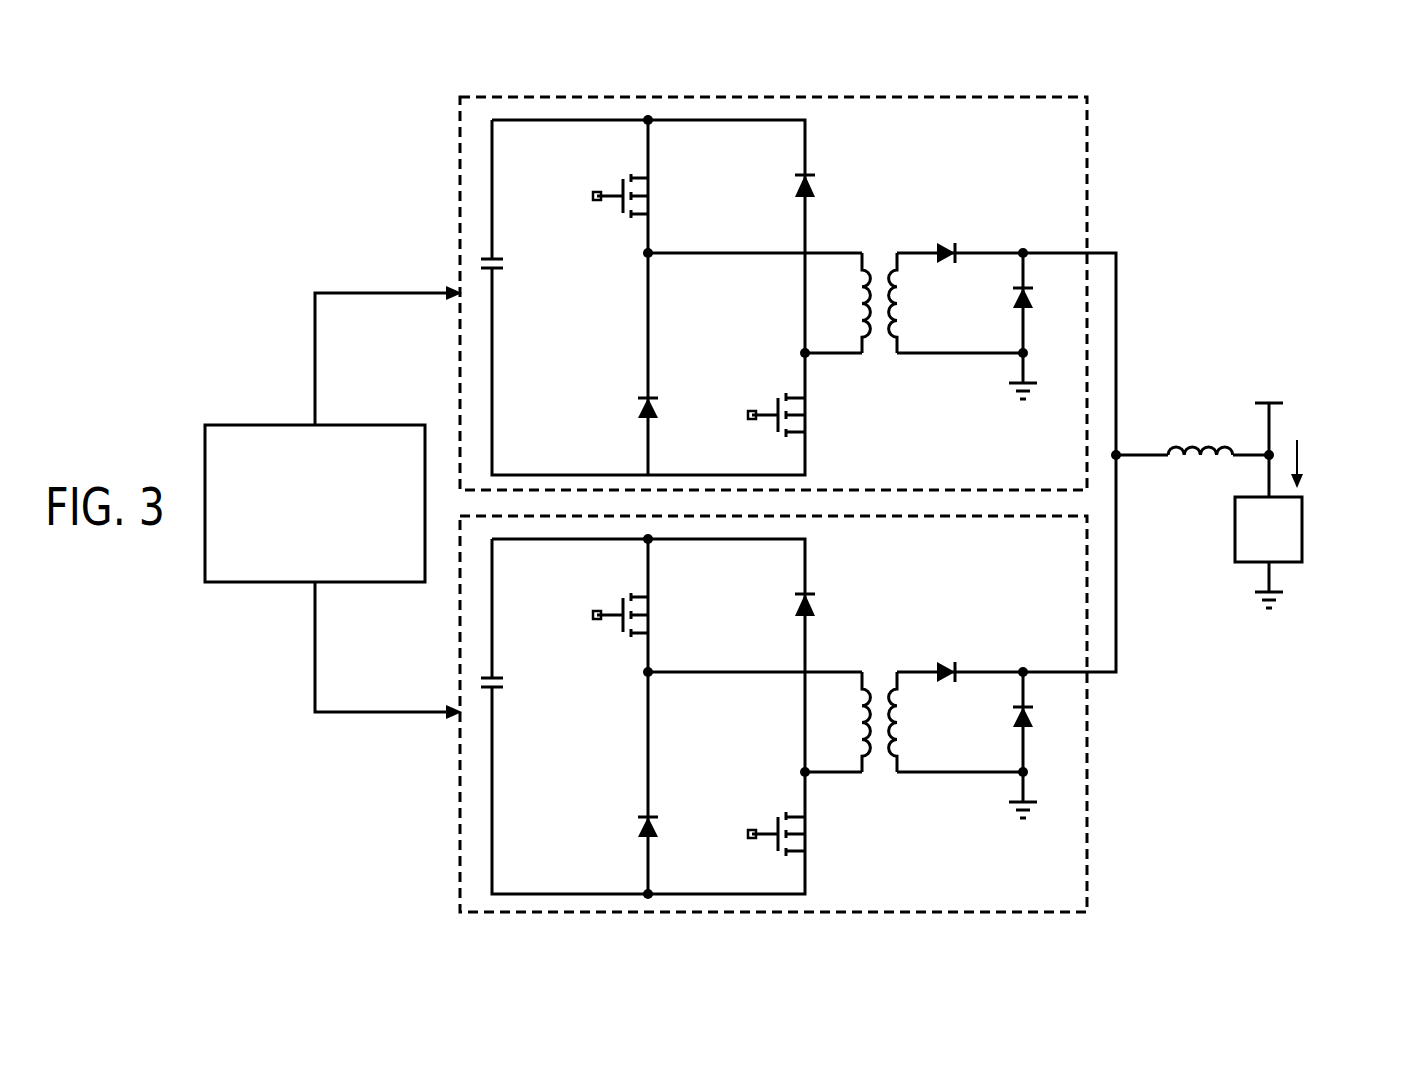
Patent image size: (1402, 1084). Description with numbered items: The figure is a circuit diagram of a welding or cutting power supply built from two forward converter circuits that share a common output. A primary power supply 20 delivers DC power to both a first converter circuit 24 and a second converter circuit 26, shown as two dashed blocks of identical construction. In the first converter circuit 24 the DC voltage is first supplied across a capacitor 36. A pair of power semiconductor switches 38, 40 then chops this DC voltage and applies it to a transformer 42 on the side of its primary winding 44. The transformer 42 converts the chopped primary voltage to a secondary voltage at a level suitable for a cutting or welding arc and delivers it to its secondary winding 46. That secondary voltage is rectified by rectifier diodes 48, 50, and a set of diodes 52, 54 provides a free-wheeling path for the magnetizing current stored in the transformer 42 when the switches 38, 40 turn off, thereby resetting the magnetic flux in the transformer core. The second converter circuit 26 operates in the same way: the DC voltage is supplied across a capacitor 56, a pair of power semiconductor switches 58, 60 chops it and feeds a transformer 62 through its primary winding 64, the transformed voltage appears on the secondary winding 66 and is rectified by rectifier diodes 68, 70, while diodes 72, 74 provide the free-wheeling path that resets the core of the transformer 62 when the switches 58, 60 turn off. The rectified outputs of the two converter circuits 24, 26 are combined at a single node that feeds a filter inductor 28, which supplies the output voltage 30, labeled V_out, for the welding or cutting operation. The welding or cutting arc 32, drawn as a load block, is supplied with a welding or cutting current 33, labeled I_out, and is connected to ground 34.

The primary power supply 20 is at (276, 425).
The first converter circuit 24 is at (1062, 97).
The second converter circuit 26 is at (1087, 800).
The filter inductor 28 is at (1198, 462).
The output voltage 30 is at (1262, 404).
The welding or cutting arc 32 is at (1235, 553).
The welding or cutting current 33 is at (1329, 438).
The ground 34 is at (1280, 600).
The capacitor 36 is at (496, 270).
The power semiconductor switch 38 is at (592, 196).
The power semiconductor switch 40 is at (748, 415).
The transformer 42 is at (885, 339).
The primary winding 44 is at (862, 312).
The secondary winding 46 is at (898, 312).
The rectifier diode 48 is at (943, 250).
The rectifier diode 50 is at (1018, 296).
The diode 52 is at (808, 188).
The diode 54 is at (660, 404).
The capacitor 56 is at (496, 689).
The power semiconductor switch 58 is at (592, 615).
The power semiconductor switch 60 is at (748, 834).
The transformer 62 is at (885, 758).
The primary winding 64 is at (862, 731).
The secondary winding 66 is at (898, 731).
The rectifier diode 68 is at (943, 669).
The rectifier diode 70 is at (1018, 715).
The diode 72 is at (808, 607).
The diode 74 is at (660, 823).